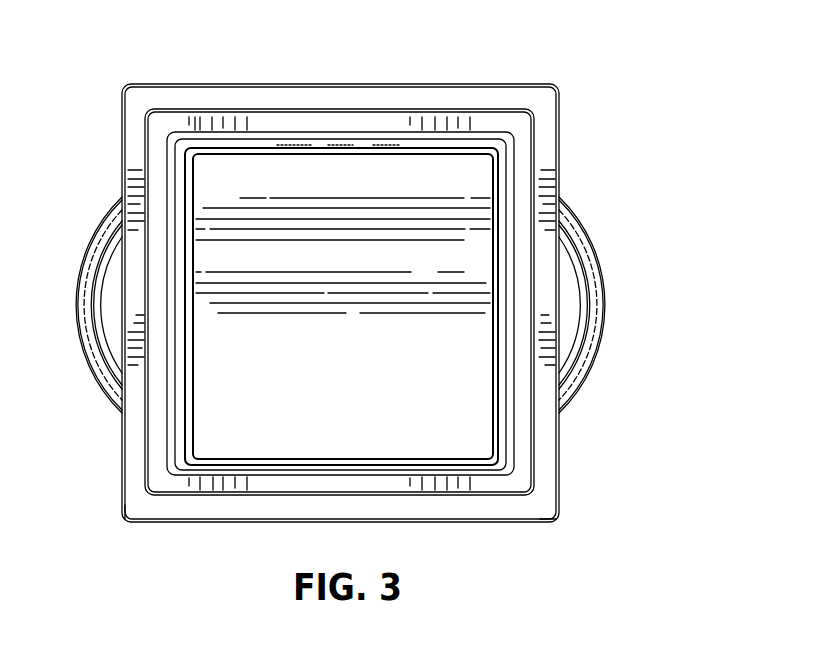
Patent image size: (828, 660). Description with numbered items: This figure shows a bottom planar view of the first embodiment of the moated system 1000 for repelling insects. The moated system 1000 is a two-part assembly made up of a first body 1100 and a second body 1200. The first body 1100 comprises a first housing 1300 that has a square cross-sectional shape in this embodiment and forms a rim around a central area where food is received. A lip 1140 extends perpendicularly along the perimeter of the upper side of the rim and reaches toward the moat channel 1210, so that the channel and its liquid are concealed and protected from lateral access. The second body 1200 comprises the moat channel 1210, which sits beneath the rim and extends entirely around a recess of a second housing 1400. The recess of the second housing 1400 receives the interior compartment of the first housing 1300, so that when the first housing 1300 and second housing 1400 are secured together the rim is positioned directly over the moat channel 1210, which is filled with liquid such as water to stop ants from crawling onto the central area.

The moated system 1000 is at (617, 85).
The first body 1100 is at (122, 522).
The lip 1140 is at (561, 140).
The second body 1200 is at (228, 485).
The moat channel 1210 is at (525, 243).
The first housing 1300 is at (560, 518).
The second housing 1400 is at (525, 459).